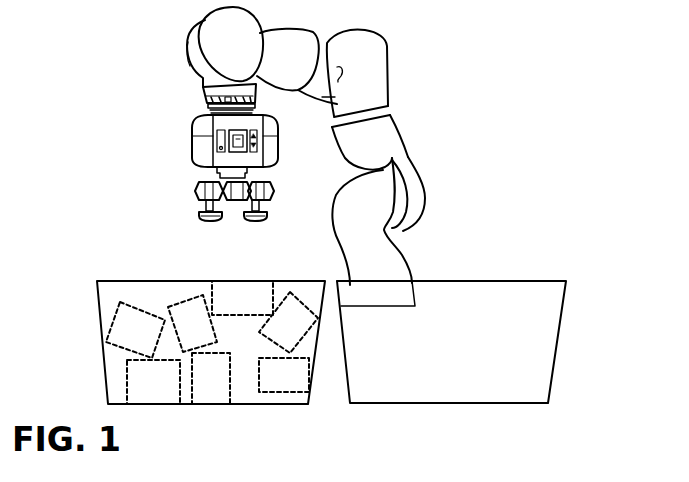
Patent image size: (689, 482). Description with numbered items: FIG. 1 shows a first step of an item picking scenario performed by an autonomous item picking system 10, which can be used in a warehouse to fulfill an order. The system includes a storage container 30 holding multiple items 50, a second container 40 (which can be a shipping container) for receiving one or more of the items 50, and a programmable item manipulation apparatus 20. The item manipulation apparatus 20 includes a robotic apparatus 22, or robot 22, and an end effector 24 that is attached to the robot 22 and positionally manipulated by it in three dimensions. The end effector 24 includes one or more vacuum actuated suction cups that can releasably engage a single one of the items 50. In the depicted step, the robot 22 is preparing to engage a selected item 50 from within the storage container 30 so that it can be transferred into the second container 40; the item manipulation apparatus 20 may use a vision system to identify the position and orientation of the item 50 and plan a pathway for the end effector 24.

The autonomous item picking system 10 is at (587, 54).
The item manipulation apparatus 20 is at (418, 93).
The robotic apparatus 22 is at (407, 147).
The end effector 24 is at (193, 143).
The storage container 30 is at (97, 305).
The second container 40 is at (563, 311).
The item 50 is at (257, 308).